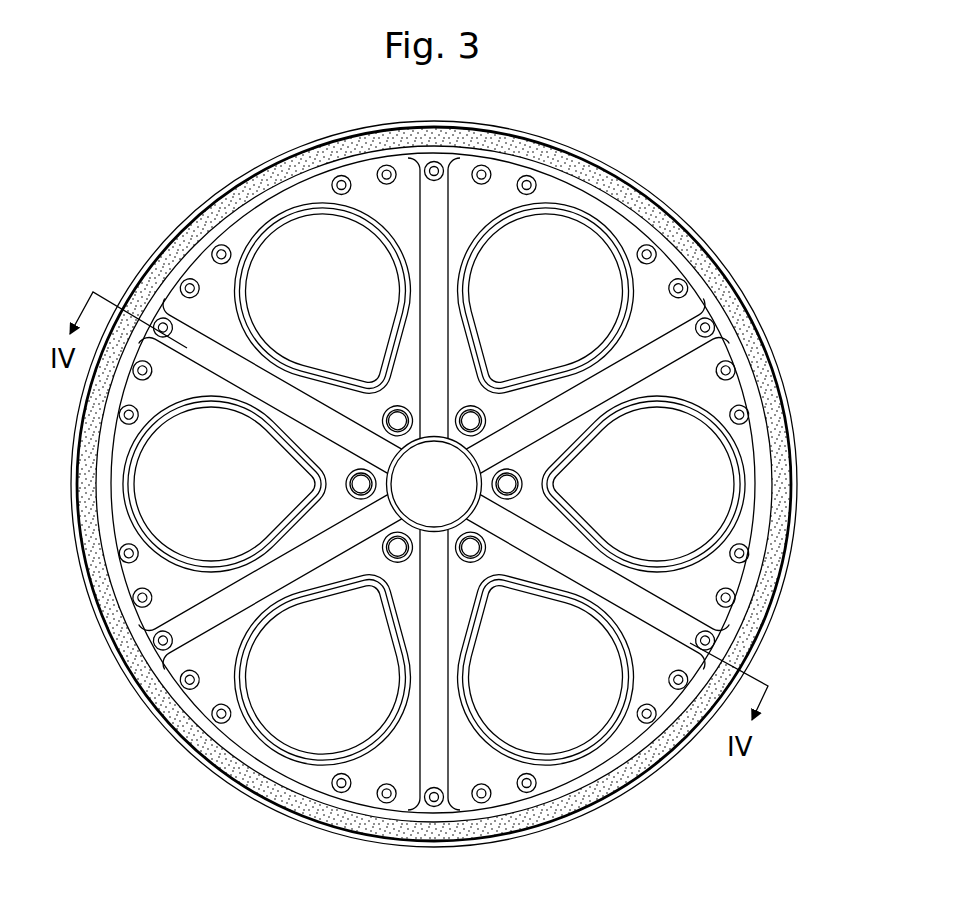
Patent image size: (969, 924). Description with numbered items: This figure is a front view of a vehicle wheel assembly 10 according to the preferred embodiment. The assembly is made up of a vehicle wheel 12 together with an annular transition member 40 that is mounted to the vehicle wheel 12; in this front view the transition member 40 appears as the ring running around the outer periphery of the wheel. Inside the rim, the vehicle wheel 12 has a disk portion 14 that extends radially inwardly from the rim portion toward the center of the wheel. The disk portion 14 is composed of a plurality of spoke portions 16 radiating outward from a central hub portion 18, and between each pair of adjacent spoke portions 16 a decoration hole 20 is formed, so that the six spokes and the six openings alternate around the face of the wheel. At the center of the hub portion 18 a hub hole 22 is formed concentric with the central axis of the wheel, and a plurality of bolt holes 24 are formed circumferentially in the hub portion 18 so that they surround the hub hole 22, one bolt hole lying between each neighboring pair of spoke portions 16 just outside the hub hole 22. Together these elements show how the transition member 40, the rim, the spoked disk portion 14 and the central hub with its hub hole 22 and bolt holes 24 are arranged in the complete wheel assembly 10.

The vehicle wheel assembly 10 is at (758, 197).
The vehicle wheel 12 is at (743, 278).
The disk portion 14 is at (390, 768).
The spoke portions 16 is at (672, 352).
The central hub portion 18 is at (482, 455).
The decoration holes 20 is at (578, 236).
The hub hole 22 is at (480, 485).
The bolt holes 24 is at (397, 420).
The annular transition member 40 is at (792, 458).